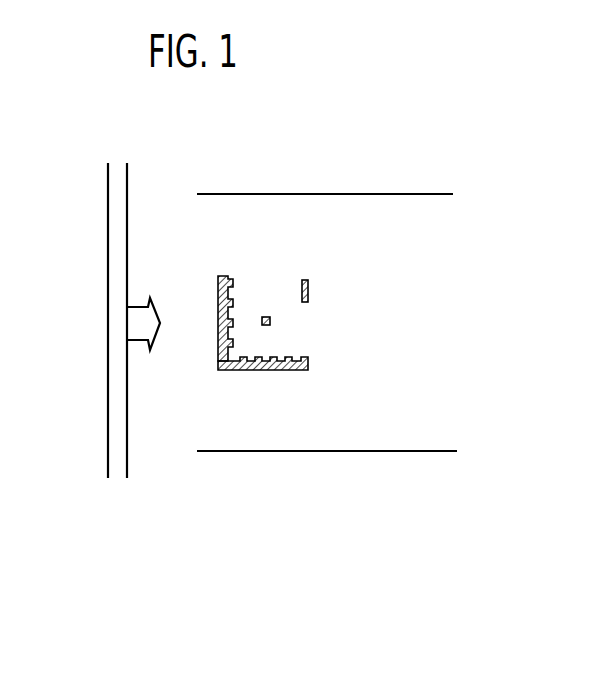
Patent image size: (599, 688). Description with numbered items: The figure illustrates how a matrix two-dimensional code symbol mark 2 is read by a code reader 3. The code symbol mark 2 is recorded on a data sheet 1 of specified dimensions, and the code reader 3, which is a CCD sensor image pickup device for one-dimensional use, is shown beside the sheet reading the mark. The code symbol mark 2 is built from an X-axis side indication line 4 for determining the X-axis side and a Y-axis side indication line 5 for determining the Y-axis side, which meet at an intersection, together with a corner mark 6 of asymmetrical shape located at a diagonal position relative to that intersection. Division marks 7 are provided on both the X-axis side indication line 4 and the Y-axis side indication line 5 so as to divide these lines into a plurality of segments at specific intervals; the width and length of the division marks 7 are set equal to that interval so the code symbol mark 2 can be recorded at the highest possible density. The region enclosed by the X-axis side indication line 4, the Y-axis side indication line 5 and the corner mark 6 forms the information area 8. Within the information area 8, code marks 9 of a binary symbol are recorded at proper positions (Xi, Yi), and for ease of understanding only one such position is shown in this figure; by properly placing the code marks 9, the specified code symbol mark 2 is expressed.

The data sheet 1 is at (297, 193).
The code symbol mark 2 is at (313, 328).
The code reader 3 is at (107, 255).
The X-axis side indication line 4 is at (263, 386).
The Y-axis side indication line 5 is at (205, 309).
The corner mark 6 is at (308, 293).
The division marks 7 is at (218, 312).
The information area 8 is at (247, 284).
The code marks 9 is at (267, 316).